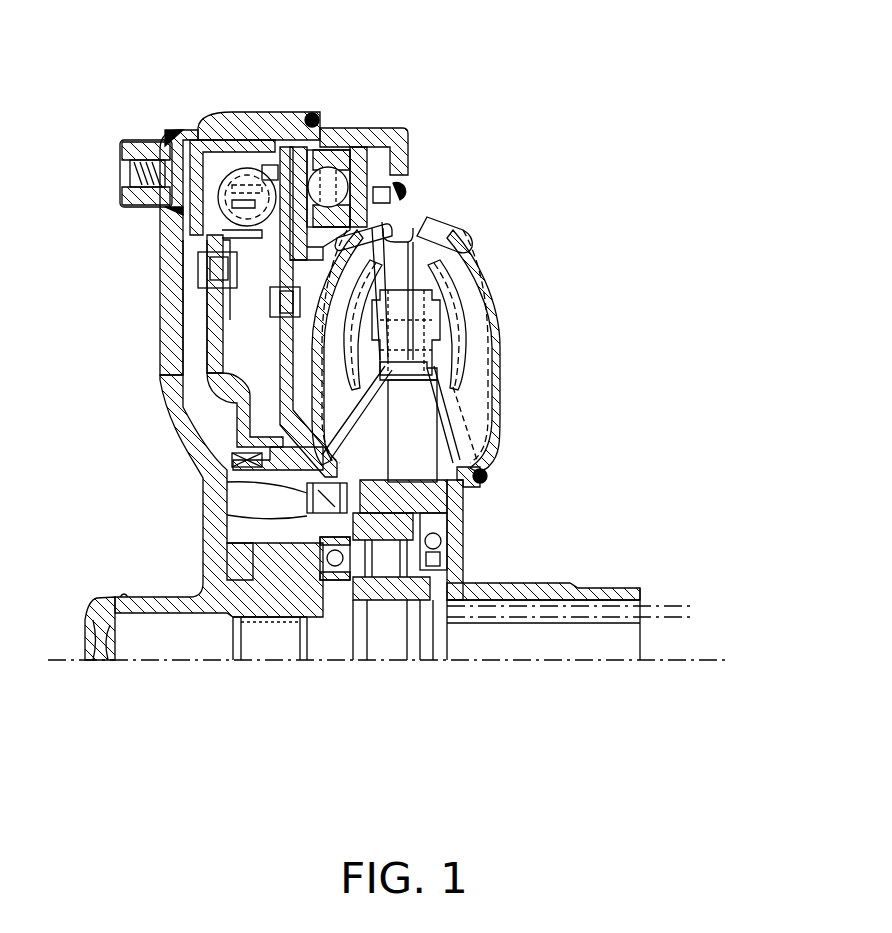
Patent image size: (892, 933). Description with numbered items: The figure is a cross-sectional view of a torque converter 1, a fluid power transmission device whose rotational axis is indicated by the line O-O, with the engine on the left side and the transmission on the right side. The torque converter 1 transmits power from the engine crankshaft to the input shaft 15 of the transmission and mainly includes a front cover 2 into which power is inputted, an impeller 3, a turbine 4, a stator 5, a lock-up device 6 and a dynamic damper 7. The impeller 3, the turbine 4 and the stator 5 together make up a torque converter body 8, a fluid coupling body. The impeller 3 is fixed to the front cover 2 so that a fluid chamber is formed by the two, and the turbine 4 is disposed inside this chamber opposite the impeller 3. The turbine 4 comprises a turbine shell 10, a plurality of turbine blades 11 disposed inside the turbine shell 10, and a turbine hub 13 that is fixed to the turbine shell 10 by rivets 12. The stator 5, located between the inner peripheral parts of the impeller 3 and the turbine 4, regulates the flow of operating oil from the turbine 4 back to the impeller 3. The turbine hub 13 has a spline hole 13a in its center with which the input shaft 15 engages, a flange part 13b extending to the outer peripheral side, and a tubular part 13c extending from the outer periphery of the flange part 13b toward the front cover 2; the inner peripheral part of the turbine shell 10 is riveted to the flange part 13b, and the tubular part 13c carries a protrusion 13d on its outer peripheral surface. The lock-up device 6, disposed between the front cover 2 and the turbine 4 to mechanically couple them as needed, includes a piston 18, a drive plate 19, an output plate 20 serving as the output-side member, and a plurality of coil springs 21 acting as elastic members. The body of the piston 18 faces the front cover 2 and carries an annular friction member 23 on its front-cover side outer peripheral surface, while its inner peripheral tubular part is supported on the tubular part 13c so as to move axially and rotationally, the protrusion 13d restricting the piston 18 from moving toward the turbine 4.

The torque converter 1 is at (117, 101).
The front cover 2 is at (165, 264).
The impeller 3 is at (487, 232).
The turbine 4 is at (387, 220).
The stator 5 is at (442, 438).
The lock-up device 6 is at (197, 305).
The dynamic damper 7 is at (345, 152).
The torque converter body 8 is at (482, 188).
The turbine shell 10 is at (407, 207).
The turbine blades 11 is at (365, 305).
The rivets 12 is at (235, 512).
The turbine hub 13 is at (232, 614).
The spline hole 13a is at (277, 622).
The flange part 13b is at (258, 490).
The tubular part 13c is at (178, 411).
The protrusion 13d is at (217, 373).
The input shaft 15 is at (487, 633).
The piston 18 is at (222, 331).
The drive plate 19 is at (210, 234).
The output plate 20 is at (298, 357).
The coil springs 21 is at (235, 170).
The friction member 23 is at (197, 158).